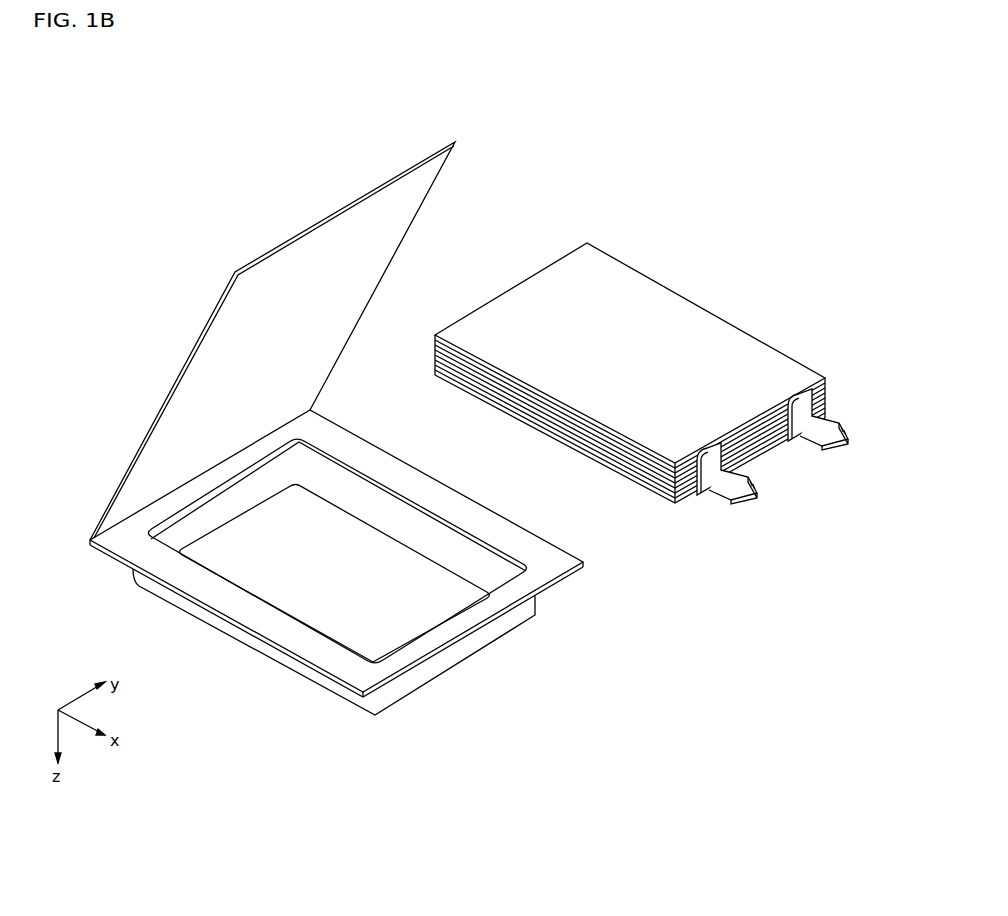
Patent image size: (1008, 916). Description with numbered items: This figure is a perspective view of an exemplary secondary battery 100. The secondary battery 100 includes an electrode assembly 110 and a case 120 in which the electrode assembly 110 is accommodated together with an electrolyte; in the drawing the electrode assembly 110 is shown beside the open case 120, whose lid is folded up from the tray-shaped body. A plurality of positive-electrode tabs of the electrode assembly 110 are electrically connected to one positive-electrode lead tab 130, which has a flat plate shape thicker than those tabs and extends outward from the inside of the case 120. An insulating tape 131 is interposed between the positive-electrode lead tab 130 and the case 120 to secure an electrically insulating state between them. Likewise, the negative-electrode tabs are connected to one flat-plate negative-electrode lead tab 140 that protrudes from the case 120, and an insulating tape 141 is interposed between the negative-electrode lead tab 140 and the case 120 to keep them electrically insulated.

The secondary battery 100 is at (670, 139).
The electrode assembly 110 is at (735, 312).
The case 120 is at (345, 228).
The positive-electrode lead tab 130 is at (753, 501).
The insulating tape 131 is at (716, 497).
The negative-electrode lead tab 140 is at (842, 443).
The insulating tape 141 is at (832, 412).